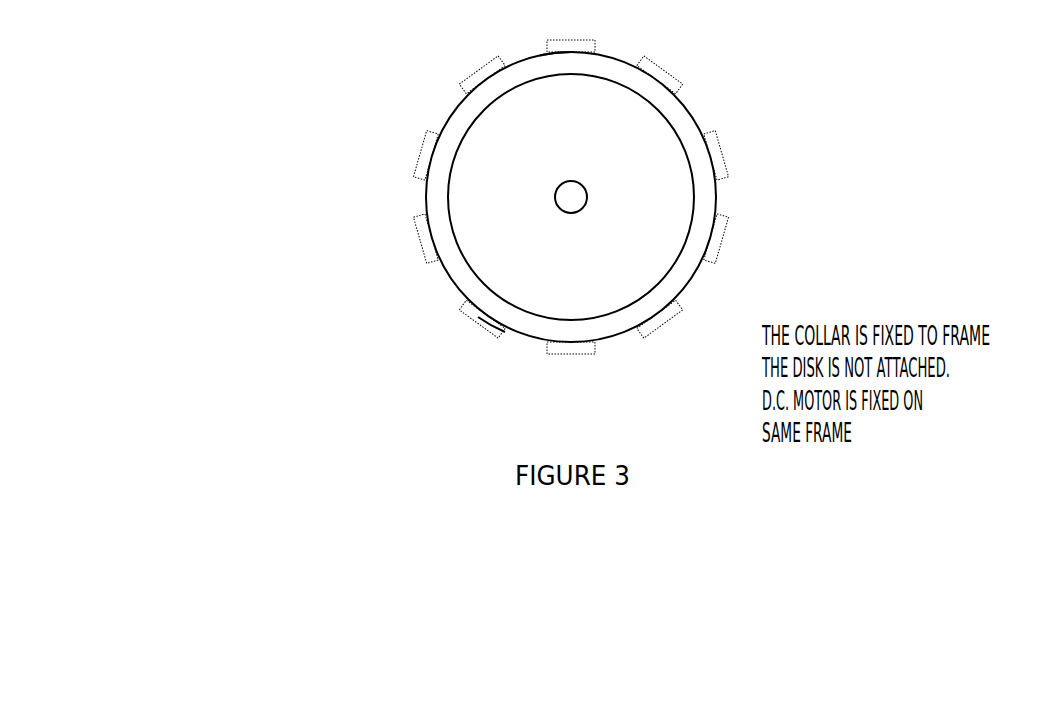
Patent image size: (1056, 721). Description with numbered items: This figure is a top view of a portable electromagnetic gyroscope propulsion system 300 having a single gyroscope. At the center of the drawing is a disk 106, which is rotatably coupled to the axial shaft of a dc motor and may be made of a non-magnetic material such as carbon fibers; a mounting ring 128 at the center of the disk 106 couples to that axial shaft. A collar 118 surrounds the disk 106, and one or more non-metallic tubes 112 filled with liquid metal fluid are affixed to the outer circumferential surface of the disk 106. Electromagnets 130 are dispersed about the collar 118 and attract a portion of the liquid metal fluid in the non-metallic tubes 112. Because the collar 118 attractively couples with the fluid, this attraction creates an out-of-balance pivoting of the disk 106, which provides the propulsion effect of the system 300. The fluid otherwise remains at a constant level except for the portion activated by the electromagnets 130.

The portable electromagnetic gyroscope propulsion system 300 is at (565, 210).
The disk 106 is at (637, 164).
The collar 118 is at (683, 122).
The non-metallic tube 112 is at (667, 260).
The mounting ring 128 is at (552, 202).
The electromagnets 130 is at (557, 53).